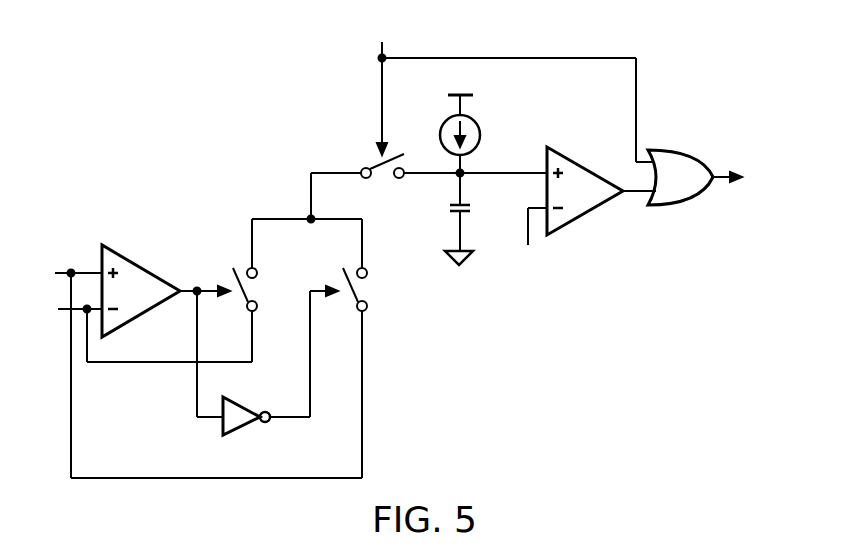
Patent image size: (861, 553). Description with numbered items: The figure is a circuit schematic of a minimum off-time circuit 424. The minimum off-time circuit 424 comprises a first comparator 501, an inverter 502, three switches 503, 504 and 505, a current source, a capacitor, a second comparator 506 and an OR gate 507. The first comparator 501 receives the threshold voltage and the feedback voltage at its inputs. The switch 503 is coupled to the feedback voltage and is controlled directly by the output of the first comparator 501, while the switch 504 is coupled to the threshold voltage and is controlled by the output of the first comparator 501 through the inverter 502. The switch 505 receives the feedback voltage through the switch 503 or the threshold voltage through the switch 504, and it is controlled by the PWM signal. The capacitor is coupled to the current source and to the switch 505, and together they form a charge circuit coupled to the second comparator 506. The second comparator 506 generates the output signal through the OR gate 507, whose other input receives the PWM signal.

The minimum off-time circuit 424 is at (792, 44).
The first comparator 501 is at (141, 291).
The inverter 502 is at (246, 426).
The switch 503 is at (263, 289).
The switch 504 is at (373, 289).
The switch 505 is at (382, 184).
The second comparator 506 is at (585, 190).
The OR gate 507 is at (680, 166).